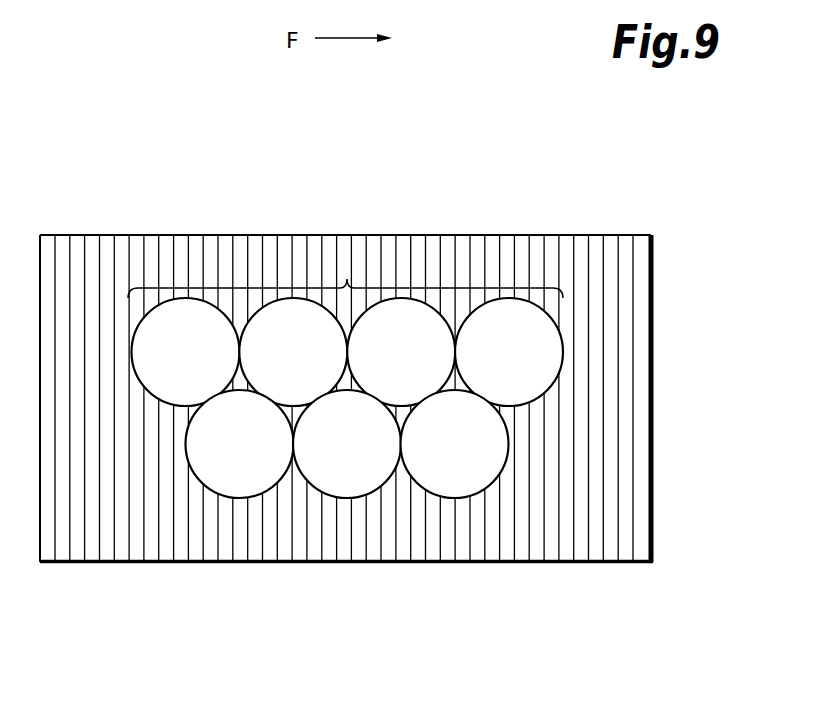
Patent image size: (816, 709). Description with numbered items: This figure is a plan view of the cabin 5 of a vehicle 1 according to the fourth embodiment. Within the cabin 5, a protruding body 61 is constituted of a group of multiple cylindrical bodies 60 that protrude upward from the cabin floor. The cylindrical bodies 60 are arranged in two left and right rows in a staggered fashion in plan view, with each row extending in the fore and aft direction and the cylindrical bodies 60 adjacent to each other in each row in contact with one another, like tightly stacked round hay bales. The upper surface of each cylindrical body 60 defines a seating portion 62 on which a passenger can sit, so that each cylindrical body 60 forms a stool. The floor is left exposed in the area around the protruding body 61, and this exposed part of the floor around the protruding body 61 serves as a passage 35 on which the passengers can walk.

The article / sheet 1 is at (566, 234).
The cabin 5 is at (479, 269).
The passage 35 is at (385, 542).
The cylindrical body 60 is at (437, 333).
The protruding body 61 is at (345, 273).
The seating portion 62 is at (471, 454).